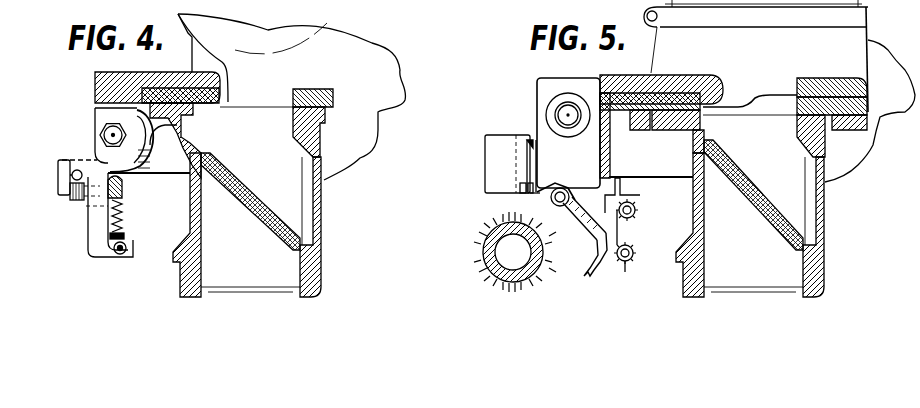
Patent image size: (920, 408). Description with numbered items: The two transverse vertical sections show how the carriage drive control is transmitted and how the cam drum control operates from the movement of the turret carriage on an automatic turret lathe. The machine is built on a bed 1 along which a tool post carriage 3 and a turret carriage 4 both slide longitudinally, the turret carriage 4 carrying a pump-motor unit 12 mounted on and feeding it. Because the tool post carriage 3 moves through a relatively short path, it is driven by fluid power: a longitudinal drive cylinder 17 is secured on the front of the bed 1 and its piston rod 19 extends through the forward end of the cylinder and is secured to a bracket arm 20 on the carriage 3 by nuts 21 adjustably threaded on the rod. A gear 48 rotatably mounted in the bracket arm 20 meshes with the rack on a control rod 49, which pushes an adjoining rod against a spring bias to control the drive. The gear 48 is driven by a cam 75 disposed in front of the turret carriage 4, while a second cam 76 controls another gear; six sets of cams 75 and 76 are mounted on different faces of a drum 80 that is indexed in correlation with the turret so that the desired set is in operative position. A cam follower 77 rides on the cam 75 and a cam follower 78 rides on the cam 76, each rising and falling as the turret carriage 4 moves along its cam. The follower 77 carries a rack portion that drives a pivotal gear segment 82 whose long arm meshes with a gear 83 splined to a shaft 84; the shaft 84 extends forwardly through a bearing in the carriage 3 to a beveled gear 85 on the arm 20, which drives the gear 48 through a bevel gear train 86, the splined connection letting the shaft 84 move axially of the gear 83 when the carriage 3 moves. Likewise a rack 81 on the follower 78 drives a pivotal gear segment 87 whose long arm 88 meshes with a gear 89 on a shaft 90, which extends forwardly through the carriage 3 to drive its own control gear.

In FIG. 4, the bed 1 is at (328, 198).
In FIG. 5, the bed 1 is at (831, 198).
In FIG. 4, the tool post carriage 3 is at (95, 77).
In FIG. 5, the turret carriage 4 is at (860, 37).
In FIG. 5, the pump-motor unit 12 is at (537, 91).
In FIG. 4, the longitudinal drive cylinder 17 is at (150, 142).
In FIG. 4, the piston rod 19 is at (110, 135).
In FIG. 4, the bracket arm 20 is at (98, 111).
In FIG. 4, the nuts 21 is at (101, 138).
In FIG. 4, the gear 48 is at (76, 205).
In FIG. 4, the control rod 49 is at (74, 175).
In FIG. 5, the cam 75 is at (488, 203).
In FIG. 5, the cam 76 is at (487, 213).
In FIG. 5, the cam follower 77 is at (509, 164).
In FIG. 5, the cam follower 78 is at (534, 158).
In FIG. 5, the drum 80 is at (480, 233).
In FIG. 5, the rack 81 is at (533, 186).
In FIG. 5, the pivotal gear segment 82 is at (590, 272).
In FIG. 5, the gear 83 is at (625, 262).
In FIG. 4, the shaft 84 is at (120, 256).
In FIG. 5, the shaft 84 is at (634, 251).
In FIG. 4, the beveled gear 85 is at (134, 247).
In FIG. 4, the bevel gear train 86 is at (136, 200).
In FIG. 5, the pivotal gear segment 87 is at (535, 192).
In FIG. 5, the long arm 88 is at (614, 193).
In FIG. 5, the gear 89 is at (634, 206).
In FIG. 5, the shaft 90 is at (637, 211).